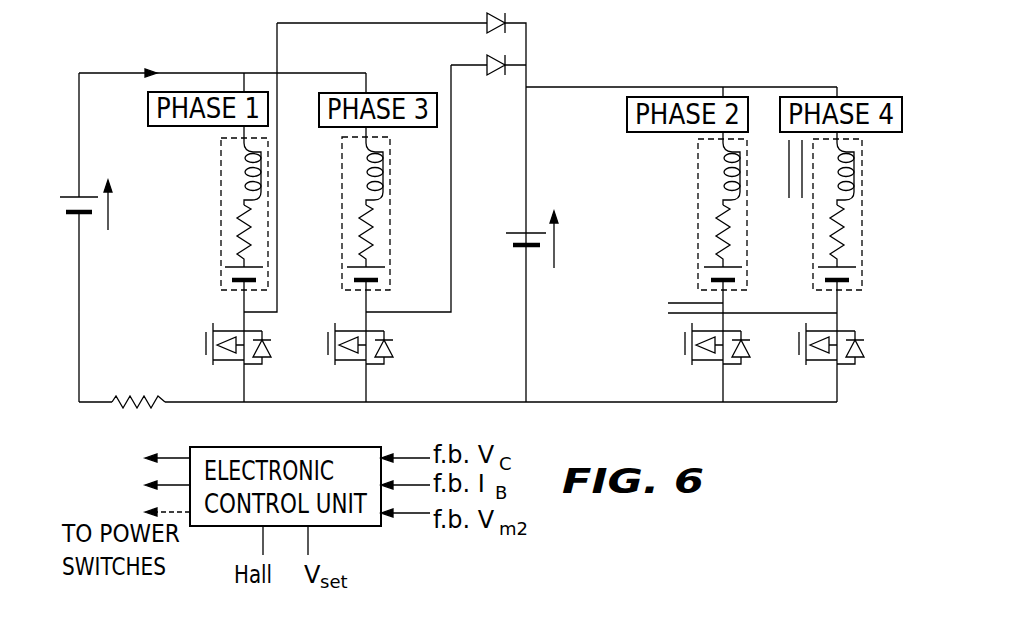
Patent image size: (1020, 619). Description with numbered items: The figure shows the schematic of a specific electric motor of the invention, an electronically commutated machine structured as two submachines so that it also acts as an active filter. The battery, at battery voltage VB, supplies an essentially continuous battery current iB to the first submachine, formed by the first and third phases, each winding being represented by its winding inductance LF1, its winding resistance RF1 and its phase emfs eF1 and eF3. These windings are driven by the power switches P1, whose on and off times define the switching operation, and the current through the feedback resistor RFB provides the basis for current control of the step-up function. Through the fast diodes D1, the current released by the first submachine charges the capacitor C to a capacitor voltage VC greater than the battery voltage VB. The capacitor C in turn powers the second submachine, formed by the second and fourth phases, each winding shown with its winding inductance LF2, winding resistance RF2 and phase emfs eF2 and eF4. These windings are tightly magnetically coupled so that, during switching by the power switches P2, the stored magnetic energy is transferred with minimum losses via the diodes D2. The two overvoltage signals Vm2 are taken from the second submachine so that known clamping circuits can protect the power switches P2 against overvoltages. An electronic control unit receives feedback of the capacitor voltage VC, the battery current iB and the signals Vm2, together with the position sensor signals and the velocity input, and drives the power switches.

The battery current iB is at (156, 51).
The battery voltage VB is at (102, 205).
The feedback resistor RFB is at (138, 381).
The winding inductance LF1 is at (220, 165).
The winding resistance RF1 is at (215, 236).
The phase 1 emf eF1 is at (222, 285).
The phase 3 emf eF3 is at (338, 291).
The power switches P1 is at (221, 362).
The fast diodes D1 is at (473, 44).
The capacitor C is at (518, 241).
The capacitor voltage VC is at (569, 239).
The winding inductance LF2 is at (695, 168).
The winding resistance RF2 is at (690, 236).
The phase 2 emf eF2 is at (697, 291).
The phase 4 emf eF4 is at (813, 291).
The power switches P2 is at (700, 362).
The diodes D2 is at (810, 362).
The overvoltage signals Vm2 is at (725, 304).